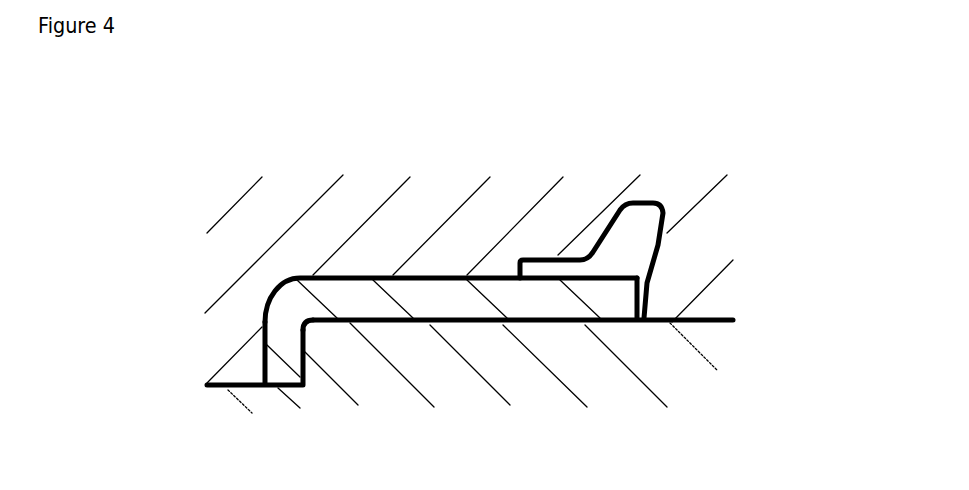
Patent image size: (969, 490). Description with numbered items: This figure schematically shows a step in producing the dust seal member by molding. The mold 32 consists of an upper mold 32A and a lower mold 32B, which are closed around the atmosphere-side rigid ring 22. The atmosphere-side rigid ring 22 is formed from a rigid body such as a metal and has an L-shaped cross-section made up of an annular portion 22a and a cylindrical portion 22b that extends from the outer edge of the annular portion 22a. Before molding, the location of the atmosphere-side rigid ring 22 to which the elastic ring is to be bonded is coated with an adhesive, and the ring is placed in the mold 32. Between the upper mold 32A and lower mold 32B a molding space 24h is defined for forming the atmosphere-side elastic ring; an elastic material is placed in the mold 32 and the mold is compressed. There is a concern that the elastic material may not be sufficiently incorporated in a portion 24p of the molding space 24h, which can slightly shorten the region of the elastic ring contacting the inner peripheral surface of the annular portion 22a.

The atmosphere-side rigid ring 22 is at (267, 322).
The annular portion 22a is at (475, 320).
The cylindrical portion 22b is at (277, 367).
The molding space 24h is at (668, 235).
The portion of the molding space 24p is at (647, 305).
The mold 32 is at (790, 260).
The upper mold 32A is at (733, 195).
The lower mold 32B is at (740, 370).